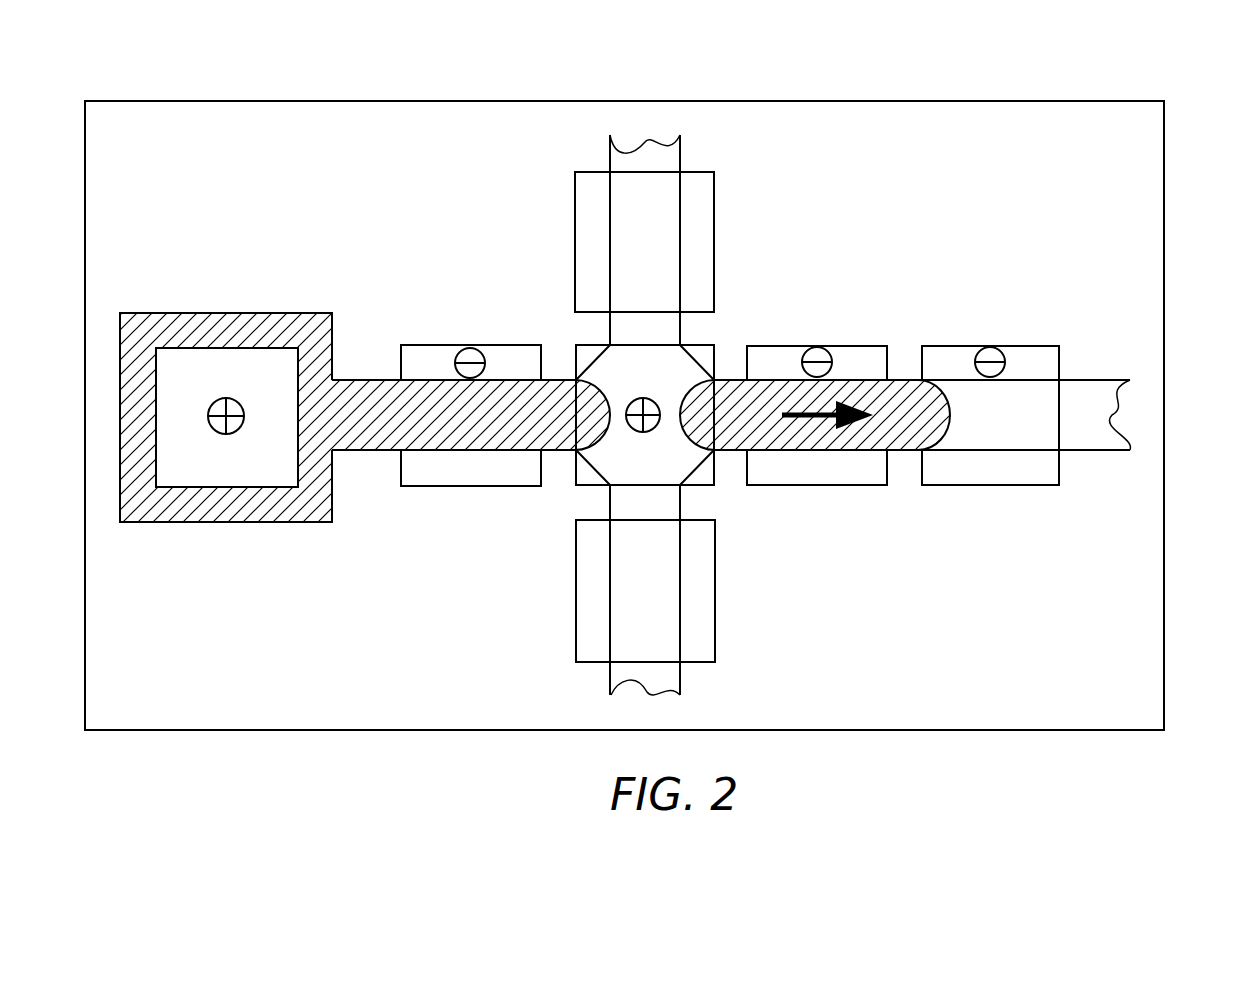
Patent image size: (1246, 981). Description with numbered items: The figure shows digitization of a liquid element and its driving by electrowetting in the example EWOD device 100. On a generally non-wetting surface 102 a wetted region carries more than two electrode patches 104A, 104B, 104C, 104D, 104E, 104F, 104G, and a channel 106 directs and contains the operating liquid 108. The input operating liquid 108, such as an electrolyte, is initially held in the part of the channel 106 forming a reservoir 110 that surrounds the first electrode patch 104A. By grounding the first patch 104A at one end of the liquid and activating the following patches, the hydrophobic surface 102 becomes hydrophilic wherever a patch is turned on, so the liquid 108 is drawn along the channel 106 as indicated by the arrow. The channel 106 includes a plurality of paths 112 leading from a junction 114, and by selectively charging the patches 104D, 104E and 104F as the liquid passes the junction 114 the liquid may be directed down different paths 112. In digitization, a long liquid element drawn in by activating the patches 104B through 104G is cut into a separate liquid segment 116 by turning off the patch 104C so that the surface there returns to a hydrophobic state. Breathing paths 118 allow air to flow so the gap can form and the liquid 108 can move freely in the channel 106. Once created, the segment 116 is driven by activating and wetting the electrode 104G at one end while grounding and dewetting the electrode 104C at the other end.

The EWOD device 100 is at (1177, 92).
The non-wetting surface 102 is at (940, 731).
The first electrode patch 104A is at (212, 487).
The electrode patch 104B is at (477, 487).
The electrode patch 104C is at (702, 340).
The electrode patch 104D is at (785, 346).
The electrode patch 104E is at (700, 663).
The electrode patch 104F is at (695, 172).
The electrode patch 104G is at (970, 487).
The channel 106 is at (1115, 358).
The operating liquid 108 is at (334, 398).
The reservoir 110 is at (210, 313).
The paths 112 is at (610, 332).
The junction 114 is at (612, 462).
The liquid segment 116 is at (848, 460).
The breathing path 118 is at (655, 270).